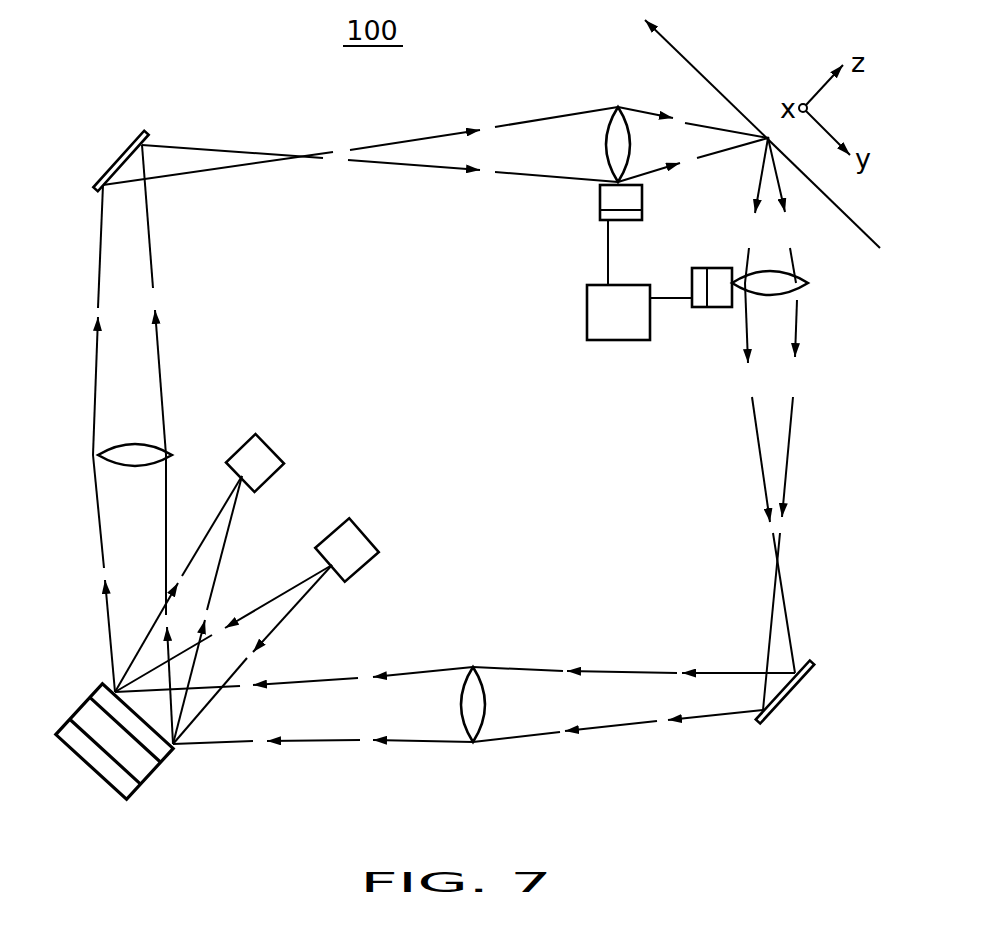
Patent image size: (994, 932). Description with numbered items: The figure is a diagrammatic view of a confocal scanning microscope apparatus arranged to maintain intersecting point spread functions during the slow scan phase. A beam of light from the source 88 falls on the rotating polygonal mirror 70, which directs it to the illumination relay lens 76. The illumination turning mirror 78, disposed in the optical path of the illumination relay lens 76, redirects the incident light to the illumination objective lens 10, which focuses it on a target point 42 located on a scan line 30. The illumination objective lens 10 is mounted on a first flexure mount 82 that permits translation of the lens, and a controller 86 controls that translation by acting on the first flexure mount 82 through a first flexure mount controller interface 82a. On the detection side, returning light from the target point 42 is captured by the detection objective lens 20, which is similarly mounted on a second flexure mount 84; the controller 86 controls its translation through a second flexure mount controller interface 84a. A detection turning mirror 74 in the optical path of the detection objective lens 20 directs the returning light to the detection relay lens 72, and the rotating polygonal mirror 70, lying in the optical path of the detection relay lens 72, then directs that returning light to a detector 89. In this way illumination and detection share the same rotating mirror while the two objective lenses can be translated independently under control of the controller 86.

The illumination objective lens 10 is at (607, 133).
The detection objective lens 20 is at (777, 297).
The scan line 30 is at (853, 222).
The target point 42 is at (768, 138).
The rotating polygonal mirror 70 is at (80, 767).
The detection relay lens 72 is at (483, 688).
The detection turning mirror 74 is at (787, 697).
The illumination relay lens 76 is at (118, 473).
The illumination turning mirror 78 is at (100, 172).
The first flexure mount 82 is at (600, 202).
The first flexure mount controller interface 82a is at (600, 220).
The second flexure mount 84 is at (720, 268).
The second flexure mount controller interface 84a is at (698, 307).
The controller 86 is at (587, 323).
The source 88 is at (368, 563).
The detector 89 is at (268, 445).